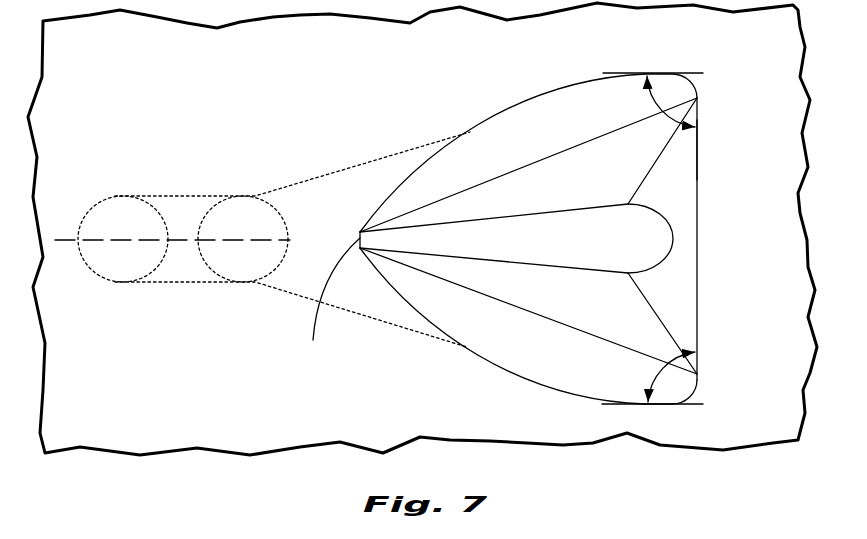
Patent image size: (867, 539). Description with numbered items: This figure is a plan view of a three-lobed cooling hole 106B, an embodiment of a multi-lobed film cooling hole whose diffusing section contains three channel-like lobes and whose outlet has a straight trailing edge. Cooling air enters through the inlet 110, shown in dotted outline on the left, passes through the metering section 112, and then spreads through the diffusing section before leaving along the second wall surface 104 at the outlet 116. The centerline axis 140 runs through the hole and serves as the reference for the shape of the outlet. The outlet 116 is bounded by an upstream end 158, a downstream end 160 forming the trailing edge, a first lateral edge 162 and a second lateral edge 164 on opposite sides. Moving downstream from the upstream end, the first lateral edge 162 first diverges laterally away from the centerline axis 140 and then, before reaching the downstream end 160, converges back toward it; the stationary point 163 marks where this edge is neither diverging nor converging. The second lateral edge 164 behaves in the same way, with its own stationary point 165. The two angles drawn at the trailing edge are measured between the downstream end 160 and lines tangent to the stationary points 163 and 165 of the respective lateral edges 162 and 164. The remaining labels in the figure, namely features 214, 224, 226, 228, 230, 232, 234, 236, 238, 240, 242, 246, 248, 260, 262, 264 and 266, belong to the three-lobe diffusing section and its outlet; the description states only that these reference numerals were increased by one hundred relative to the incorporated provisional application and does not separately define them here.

The second wall surface 104 is at (107, 63).
The centerline axis 140 is at (62, 240).
The inlet 110 is at (118, 270).
The metering section 112 is at (187, 270).
The three-lobed cooling hole 106B is at (399, 177).
The first lateral edge 162 is at (587, 82).
The second lateral edge 164 is at (562, 390).
The upstream end 158 is at (329, 301).
The upper rounded corner 240 is at (700, 100).
The downstream end 160 is at (700, 341).
The outlet 116 is at (702, 192).
The upper trailing edge segment 266 is at (700, 153).
The stationary point 163 is at (645, 74).
The stationary point 165 is at (648, 405).
The upper flow region 230 is at (585, 138).
The upper central boundary line 246 is at (512, 214).
The lower central boundary line 248 is at (512, 267).
The lower flow region 234 is at (572, 361).
The central flow region 232 is at (620, 255).
The upper triangular region 262 is at (687, 203).
The lower triangular region 264 is at (688, 296).
The central region rounded end 242 is at (670, 229).
The central flow direction 226 is at (646, 243).
The lower triangular region edge 260 is at (677, 318).
The flow direction arrow 214 is at (474, 151).
The upper flow direction 224 is at (510, 134).
The upper edge feature 236 is at (546, 92).
The lower flow direction 228 is at (492, 329).
The lower edge feature 238 is at (517, 373).